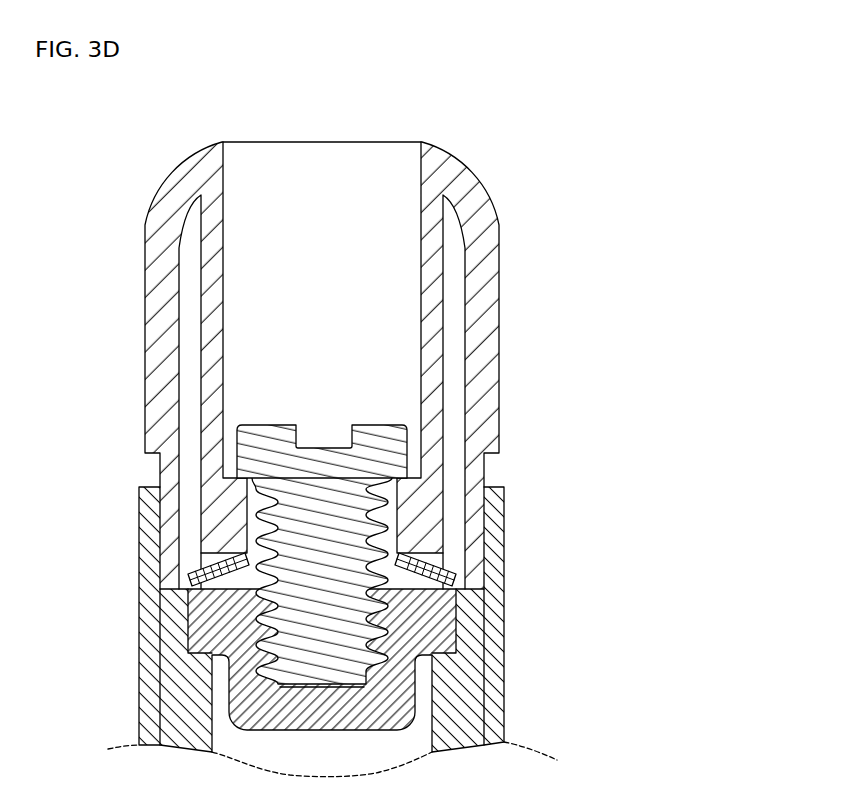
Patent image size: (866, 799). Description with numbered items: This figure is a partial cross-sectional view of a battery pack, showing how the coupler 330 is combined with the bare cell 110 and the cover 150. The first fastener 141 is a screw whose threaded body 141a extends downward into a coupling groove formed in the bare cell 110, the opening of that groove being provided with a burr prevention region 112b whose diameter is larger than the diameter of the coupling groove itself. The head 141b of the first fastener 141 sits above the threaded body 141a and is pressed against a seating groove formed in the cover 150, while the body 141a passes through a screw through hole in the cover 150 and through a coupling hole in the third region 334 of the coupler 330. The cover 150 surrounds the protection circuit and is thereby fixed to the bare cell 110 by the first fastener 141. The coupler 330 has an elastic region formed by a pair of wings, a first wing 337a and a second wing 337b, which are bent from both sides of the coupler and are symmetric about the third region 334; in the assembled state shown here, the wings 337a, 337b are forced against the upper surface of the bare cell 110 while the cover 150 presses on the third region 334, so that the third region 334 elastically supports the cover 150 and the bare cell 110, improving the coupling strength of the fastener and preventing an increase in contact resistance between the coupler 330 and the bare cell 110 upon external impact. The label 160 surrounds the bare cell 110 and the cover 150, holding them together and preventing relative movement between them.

The bare cell 110 is at (489, 719).
The burr prevention region 112b is at (243, 607).
The first fastener 141 is at (452, 556).
The body of the first fastener 141a is at (386, 523).
The head of the first fastener 141b is at (384, 458).
The cover 150 is at (336, 365).
The label 160 is at (504, 628).
The coupler 330 is at (365, 576).
The third region of the coupler 334 is at (243, 550).
The first wing 337a is at (188, 576).
The second wing 337b is at (457, 575).